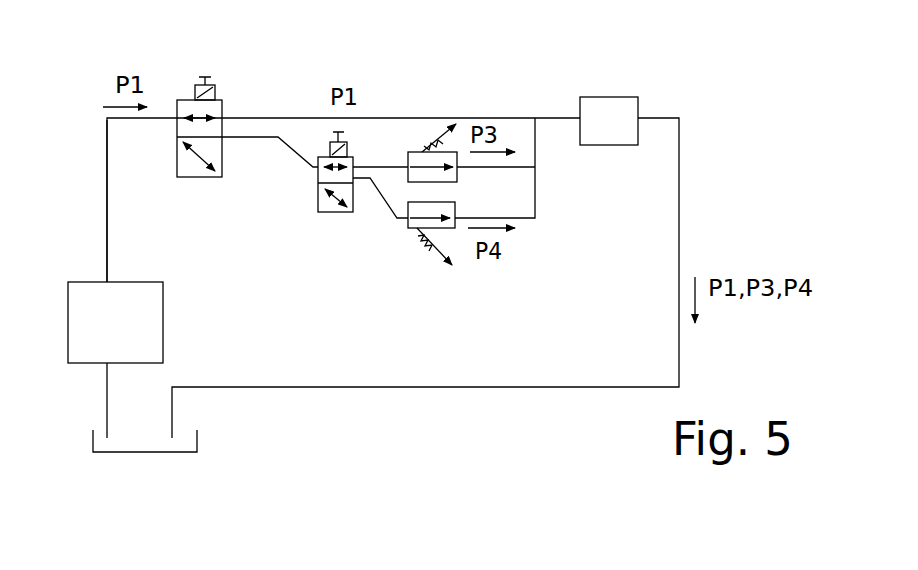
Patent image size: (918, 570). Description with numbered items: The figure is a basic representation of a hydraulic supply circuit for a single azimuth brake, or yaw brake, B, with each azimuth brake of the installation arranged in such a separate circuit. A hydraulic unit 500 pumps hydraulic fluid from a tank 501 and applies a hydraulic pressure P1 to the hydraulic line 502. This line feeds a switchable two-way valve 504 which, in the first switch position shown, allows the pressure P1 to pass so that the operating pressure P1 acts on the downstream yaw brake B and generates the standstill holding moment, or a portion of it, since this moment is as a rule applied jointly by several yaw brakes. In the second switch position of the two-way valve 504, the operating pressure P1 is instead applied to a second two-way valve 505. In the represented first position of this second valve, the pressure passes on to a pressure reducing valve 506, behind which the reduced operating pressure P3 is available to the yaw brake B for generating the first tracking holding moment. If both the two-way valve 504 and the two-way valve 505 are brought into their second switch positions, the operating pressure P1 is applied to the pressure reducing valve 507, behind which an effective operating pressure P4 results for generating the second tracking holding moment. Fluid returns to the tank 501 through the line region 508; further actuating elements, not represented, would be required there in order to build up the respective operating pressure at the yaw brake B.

The hydraulic unit 500 is at (82, 298).
The tank 501 is at (133, 452).
The hydraulic line 502 is at (107, 167).
The switchable two-way valve 504 is at (223, 100).
The second two-way valve 505 is at (318, 201).
The pressure reducing valve 506 is at (413, 152).
The pressure reducing valve 507 is at (403, 226).
The line region 508 is at (485, 388).
The azimuth brake (yaw brake) B is at (609, 105).